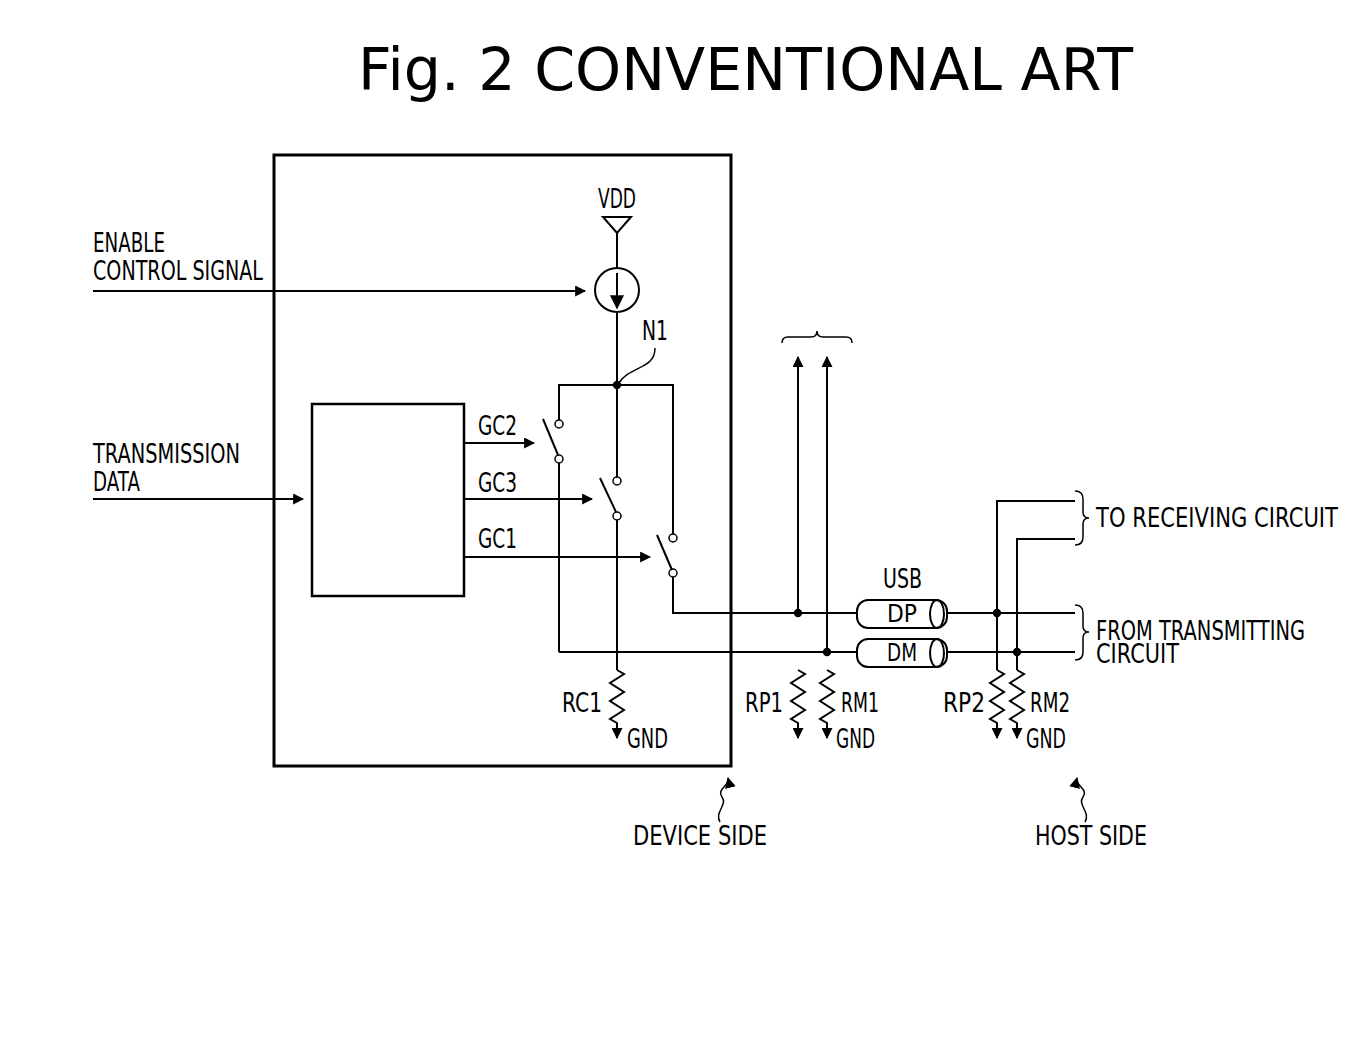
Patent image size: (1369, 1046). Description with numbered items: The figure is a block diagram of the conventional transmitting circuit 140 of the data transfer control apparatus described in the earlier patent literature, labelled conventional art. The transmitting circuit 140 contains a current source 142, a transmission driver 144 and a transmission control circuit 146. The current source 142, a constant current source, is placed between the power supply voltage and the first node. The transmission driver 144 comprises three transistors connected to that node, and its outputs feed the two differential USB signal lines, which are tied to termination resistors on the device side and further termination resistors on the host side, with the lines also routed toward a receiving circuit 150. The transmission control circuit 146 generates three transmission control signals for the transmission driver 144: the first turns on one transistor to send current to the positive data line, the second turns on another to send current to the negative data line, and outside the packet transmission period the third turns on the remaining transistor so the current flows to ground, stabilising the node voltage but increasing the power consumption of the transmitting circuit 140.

The transmitting circuit 140 is at (731, 233).
The current source 142 is at (639, 292).
The transmission driver 144 is at (544, 378).
The transmission control circuit 146 is at (387, 404).
The receiving circuit 150 is at (816, 461).